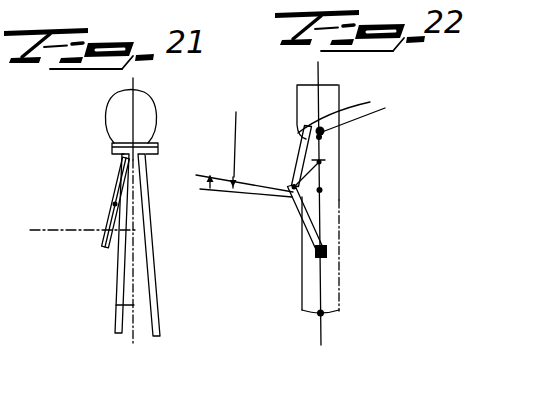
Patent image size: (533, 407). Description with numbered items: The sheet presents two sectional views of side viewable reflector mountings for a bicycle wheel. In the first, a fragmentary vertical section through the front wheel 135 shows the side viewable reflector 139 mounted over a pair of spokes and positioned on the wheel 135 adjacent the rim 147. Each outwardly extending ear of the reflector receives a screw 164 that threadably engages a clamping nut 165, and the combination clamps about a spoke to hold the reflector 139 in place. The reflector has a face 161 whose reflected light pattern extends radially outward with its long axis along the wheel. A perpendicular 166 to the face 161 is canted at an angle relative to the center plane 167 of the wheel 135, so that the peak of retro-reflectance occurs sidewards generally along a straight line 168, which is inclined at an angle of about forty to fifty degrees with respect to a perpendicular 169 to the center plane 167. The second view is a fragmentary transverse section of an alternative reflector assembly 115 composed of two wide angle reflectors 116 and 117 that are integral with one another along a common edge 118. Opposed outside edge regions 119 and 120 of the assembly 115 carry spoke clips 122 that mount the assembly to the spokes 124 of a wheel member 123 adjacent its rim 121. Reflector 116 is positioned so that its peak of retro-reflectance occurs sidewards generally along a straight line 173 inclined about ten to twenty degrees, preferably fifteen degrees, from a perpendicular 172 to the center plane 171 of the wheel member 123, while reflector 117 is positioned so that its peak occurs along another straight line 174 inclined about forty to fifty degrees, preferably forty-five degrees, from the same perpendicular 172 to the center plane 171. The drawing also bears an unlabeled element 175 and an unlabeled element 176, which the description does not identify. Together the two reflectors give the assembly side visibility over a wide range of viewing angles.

In FIG. 21, the wheel 135 is at (157, 95).
In FIG. 21, the rim 147 is at (158, 152).
In FIG. 21, the straight line 168 is at (163, 213).
In FIG. 21, the screw 164 is at (112, 186).
In FIG. 21, the perpendicular 166 is at (112, 201).
In FIG. 21, the clamping nut 165 is at (138, 198).
In FIG. 21, the face 161 is at (110, 212).
In FIG. 21, the perpendicular 169 is at (50, 232).
In FIG. 21, the side viewable reflector 139 is at (100, 247).
In FIG. 21, the center plane 167 is at (120, 306).
In FIG. 22, the wide angle reflector 117 is at (298, 122).
In FIG. 22, the straight line 174 is at (265, 139).
In FIG. 22, the arm link 176 is at (295, 190).
In FIG. 22, the outside edge region 120 is at (350, 104).
In FIG. 22, the spoke clips 122 is at (374, 112).
In FIG. 22, the wheel member 123 is at (327, 137).
In FIG. 22, the straight line 173 is at (220, 177).
In FIG. 22, the spokes 124 is at (325, 136).
In FIG. 22, the common edge 118 is at (302, 188).
In FIG. 22, the reflector assembly 115 is at (319, 162).
In FIG. 22, the arc indicator 175 is at (207, 190).
In FIG. 22, the perpendicular 172 is at (276, 196).
In FIG. 22, the wide angle reflector 116 is at (302, 232).
In FIG. 22, the rim 121 is at (335, 281).
In FIG. 22, the outside edge region 119 is at (302, 258).
In FIG. 22, the center plane 171 is at (324, 318).